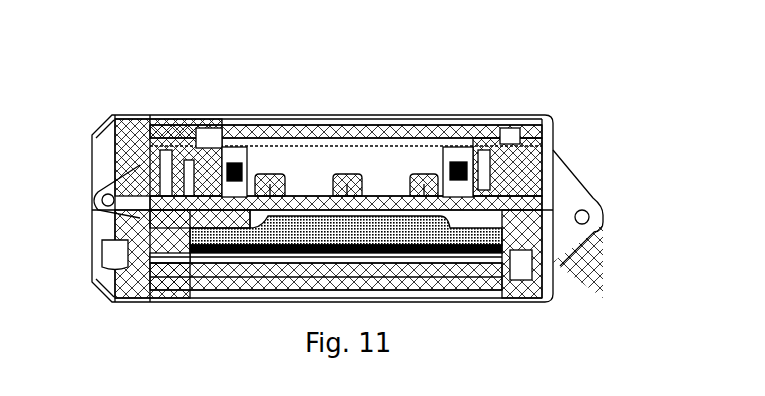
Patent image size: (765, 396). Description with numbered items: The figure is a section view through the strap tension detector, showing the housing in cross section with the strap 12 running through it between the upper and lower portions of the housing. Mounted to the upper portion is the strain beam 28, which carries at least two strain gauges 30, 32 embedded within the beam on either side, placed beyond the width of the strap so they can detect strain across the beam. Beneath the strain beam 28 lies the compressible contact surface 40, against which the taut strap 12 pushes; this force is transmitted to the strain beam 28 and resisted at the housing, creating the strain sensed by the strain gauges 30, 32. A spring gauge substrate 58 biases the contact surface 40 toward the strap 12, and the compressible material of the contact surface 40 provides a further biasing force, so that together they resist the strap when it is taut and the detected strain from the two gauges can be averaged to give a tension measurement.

The strap 12 is at (212, 253).
The strain beam 28 is at (492, 142).
The strain gauge 30 is at (241, 163).
The strain gauge 32 is at (460, 162).
The compressible contact surface 40 is at (502, 238).
The spring gauge substrate 58 is at (226, 145).